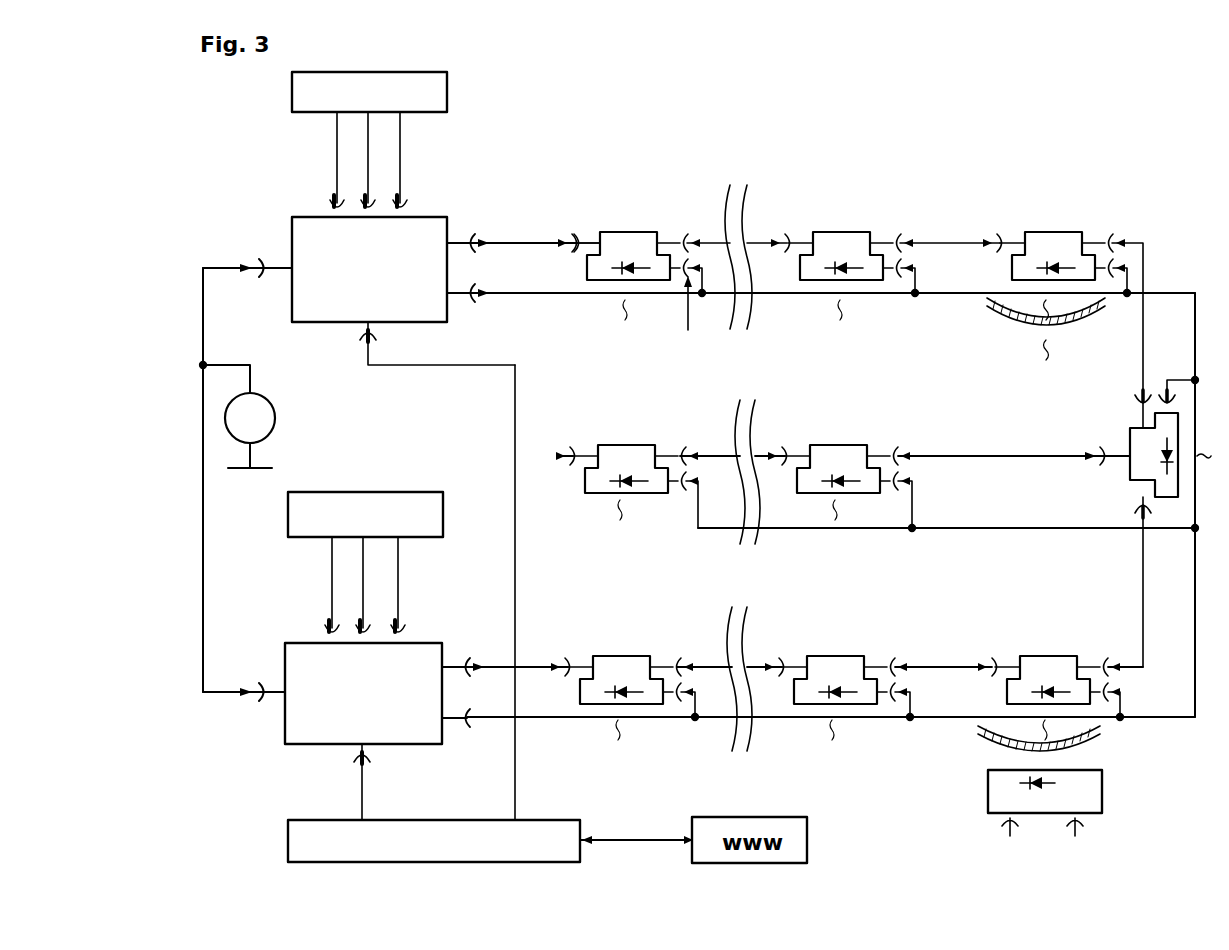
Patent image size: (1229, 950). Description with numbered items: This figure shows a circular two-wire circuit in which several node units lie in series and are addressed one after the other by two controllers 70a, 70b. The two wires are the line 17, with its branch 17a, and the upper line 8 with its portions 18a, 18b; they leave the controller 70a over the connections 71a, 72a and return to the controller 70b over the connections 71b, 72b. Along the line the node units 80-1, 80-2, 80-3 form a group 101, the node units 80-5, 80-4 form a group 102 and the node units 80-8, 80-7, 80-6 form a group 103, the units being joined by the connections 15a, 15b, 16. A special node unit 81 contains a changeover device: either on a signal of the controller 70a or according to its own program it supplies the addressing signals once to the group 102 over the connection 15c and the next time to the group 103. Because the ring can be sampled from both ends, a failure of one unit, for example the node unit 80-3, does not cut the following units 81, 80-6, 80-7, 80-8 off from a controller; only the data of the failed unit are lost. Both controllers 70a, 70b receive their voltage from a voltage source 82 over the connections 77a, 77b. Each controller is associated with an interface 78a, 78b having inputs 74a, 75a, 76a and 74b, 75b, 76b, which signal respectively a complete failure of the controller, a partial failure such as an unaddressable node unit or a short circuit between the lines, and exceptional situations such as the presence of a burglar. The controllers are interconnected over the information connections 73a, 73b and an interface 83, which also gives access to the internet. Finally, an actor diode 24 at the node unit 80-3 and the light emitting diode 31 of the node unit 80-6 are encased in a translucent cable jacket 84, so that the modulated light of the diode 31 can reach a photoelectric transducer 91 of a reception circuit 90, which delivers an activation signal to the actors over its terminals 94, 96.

The connector 8 is at (512, 240).
The line 17 is at (512, 290).
The line 17a is at (677, 315).
The connector 18a is at (687, 230).
The connector 18b is at (578, 228).
The connector 15a is at (903, 240).
The connector 15b is at (792, 228).
The connection 15c is at (1097, 463).
The connector 16 is at (905, 266).
The actor diode 24 is at (1035, 288).
The light emitting diode 31 is at (1033, 682).
The controller 70a is at (369, 269).
The controller 70b is at (363, 693).
The connection 71a is at (484, 233).
The connection 71b is at (478, 657).
The connection 72a is at (485, 308).
The connection 72b is at (476, 724).
The information connection 73a is at (360, 342).
The information connection 73b is at (372, 768).
The input 74a is at (327, 183).
The input 74b is at (323, 605).
The input 75a is at (378, 178).
The input 75b is at (375, 600).
The input 76a is at (412, 180).
The input 76b is at (404, 605).
The connection 77a is at (258, 258).
The connection 77b is at (270, 682).
The interface 78a is at (369, 92).
The interface 78b is at (365, 514).
The node unit 80-1 is at (632, 252).
The node unit 80-2 is at (845, 252).
The node unit 80-3 is at (1057, 252).
The node unit 80-4 is at (842, 476).
The node unit 80-5 is at (627, 474).
The node unit 80-6 is at (1051, 675).
The node unit 80-7 is at (839, 675).
The node unit 80-8 is at (625, 675).
The node unit 81 is at (1125, 425).
The voltage source 82 is at (239, 416).
The interface 83 is at (490, 841).
The translucent cable jacket 84 is at (1110, 308).
The reception circuit 90 is at (1040, 781).
The photoelectric transducer 91 is at (1035, 786).
The terminal 94 is at (1000, 823).
The terminal 96 is at (1088, 823).
The group 101 is at (1077, 168).
The group 102 is at (907, 412).
The group 103 is at (1077, 612).